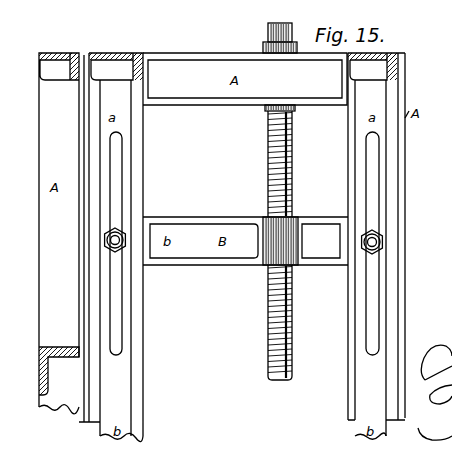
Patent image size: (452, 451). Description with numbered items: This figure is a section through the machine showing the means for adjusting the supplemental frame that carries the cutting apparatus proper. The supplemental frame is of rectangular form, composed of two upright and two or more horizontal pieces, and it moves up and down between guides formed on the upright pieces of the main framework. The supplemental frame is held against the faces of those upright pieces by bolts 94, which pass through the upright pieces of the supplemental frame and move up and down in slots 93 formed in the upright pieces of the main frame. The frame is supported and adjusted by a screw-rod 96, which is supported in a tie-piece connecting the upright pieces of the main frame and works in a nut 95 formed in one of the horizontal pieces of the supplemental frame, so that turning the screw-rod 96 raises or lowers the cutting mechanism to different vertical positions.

The slots 93 is at (118, 312).
The bolts 94 is at (116, 253).
The nut 95 is at (280, 241).
The screw-rod 96 is at (269, 180).